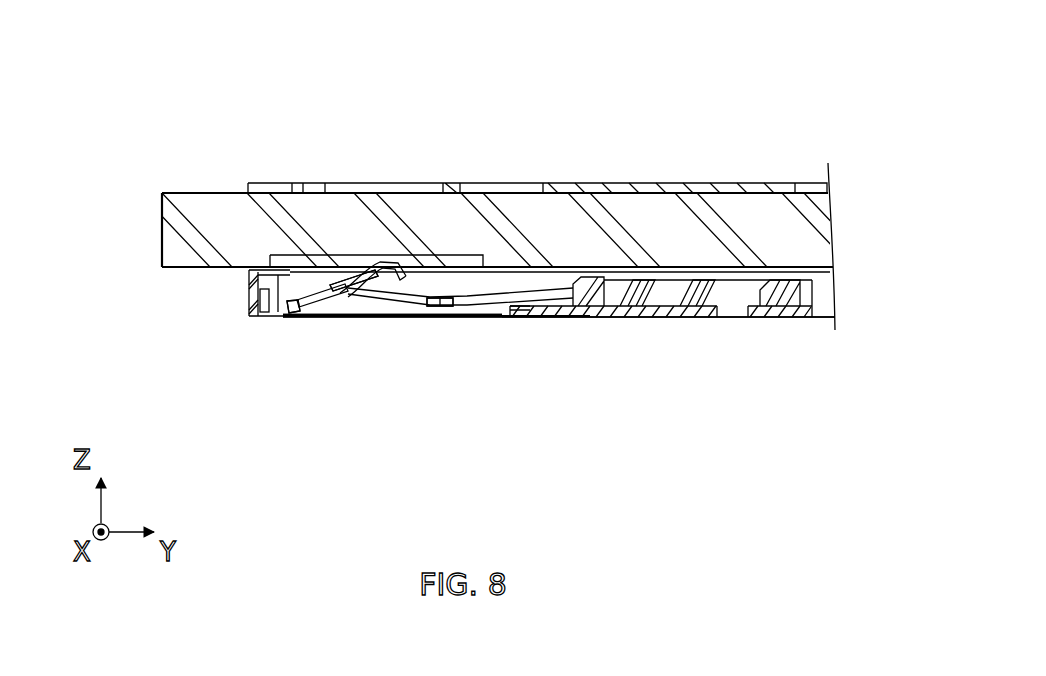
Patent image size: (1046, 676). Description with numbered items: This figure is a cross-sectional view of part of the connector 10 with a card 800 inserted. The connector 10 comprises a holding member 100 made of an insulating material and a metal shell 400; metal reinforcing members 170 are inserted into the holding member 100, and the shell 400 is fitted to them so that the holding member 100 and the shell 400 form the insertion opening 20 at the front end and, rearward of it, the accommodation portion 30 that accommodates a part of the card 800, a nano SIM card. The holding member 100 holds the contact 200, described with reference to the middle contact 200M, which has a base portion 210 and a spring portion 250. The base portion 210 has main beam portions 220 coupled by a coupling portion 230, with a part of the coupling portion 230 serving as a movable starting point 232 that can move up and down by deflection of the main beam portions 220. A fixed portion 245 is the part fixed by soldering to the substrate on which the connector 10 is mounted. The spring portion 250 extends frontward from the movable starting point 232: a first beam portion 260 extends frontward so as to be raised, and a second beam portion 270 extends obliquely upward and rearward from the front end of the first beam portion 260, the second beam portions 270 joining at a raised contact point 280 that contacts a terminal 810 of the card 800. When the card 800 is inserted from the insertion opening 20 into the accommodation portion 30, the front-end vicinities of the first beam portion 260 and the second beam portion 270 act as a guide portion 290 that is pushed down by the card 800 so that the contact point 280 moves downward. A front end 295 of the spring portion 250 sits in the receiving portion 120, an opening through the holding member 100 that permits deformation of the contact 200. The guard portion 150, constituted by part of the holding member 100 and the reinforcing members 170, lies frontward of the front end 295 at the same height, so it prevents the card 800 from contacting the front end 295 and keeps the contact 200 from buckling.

The connector 10 is at (492, 106).
The insertion opening 20 is at (276, 187).
The accommodation portion 30 is at (745, 188).
The holding member 100 is at (647, 297).
The receiving portion 120 is at (483, 322).
The guard portion 150 is at (249, 282).
The reinforcing member 170 is at (262, 302).
The contact 200 is at (344, 276).
The middle contact 200M is at (320, 199).
The base portion 210 is at (440, 398).
The main beam portion 220 is at (508, 300).
The coupling portion 230 is at (437, 354).
The movable starting point 232 is at (455, 305).
The fixed portion 245 is at (530, 318).
The spring portion 250 is at (394, 391).
The first beam portion 260 is at (398, 298).
The second beam portion 270 is at (352, 283).
The contact point 280 is at (377, 280).
The guide portion 290 is at (240, 358).
The front end 295 is at (285, 316).
The shell 400 is at (575, 183).
The card 800 is at (673, 213).
The terminal 810 is at (418, 256).